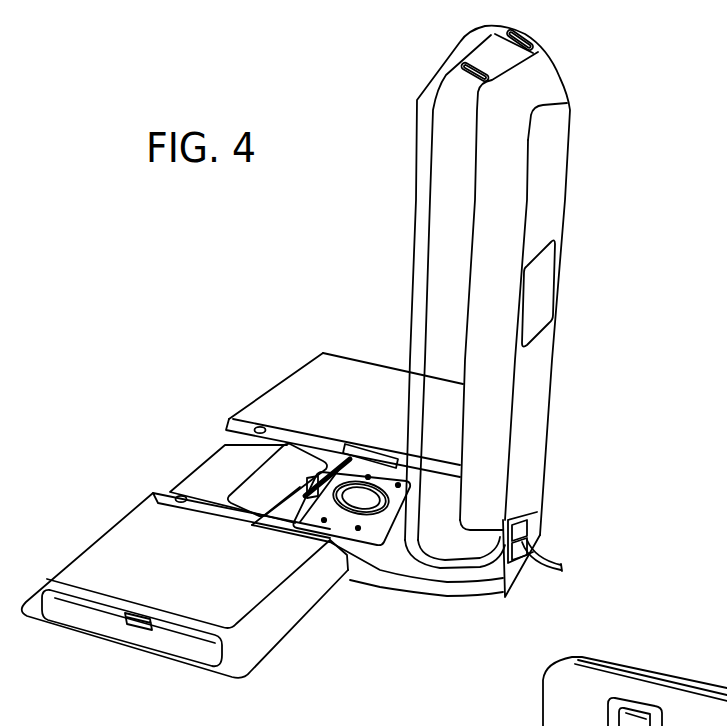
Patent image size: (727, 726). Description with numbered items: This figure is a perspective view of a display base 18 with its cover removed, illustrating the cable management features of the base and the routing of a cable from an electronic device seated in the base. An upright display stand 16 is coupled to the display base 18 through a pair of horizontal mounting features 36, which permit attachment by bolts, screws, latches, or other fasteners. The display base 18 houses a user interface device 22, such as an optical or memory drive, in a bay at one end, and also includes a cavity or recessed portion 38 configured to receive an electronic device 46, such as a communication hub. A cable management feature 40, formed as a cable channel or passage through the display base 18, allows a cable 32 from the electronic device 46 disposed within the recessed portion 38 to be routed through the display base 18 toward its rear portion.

The display stand 16 is at (547, 80).
The display base 18 is at (120, 548).
The user interface device 22 is at (177, 635).
The cable 32 is at (397, 470).
The horizontal mounting features 36 is at (345, 527).
The recessed portion 38 is at (223, 462).
The cable management feature 40 is at (375, 458).
The electronic device 46 is at (248, 494).